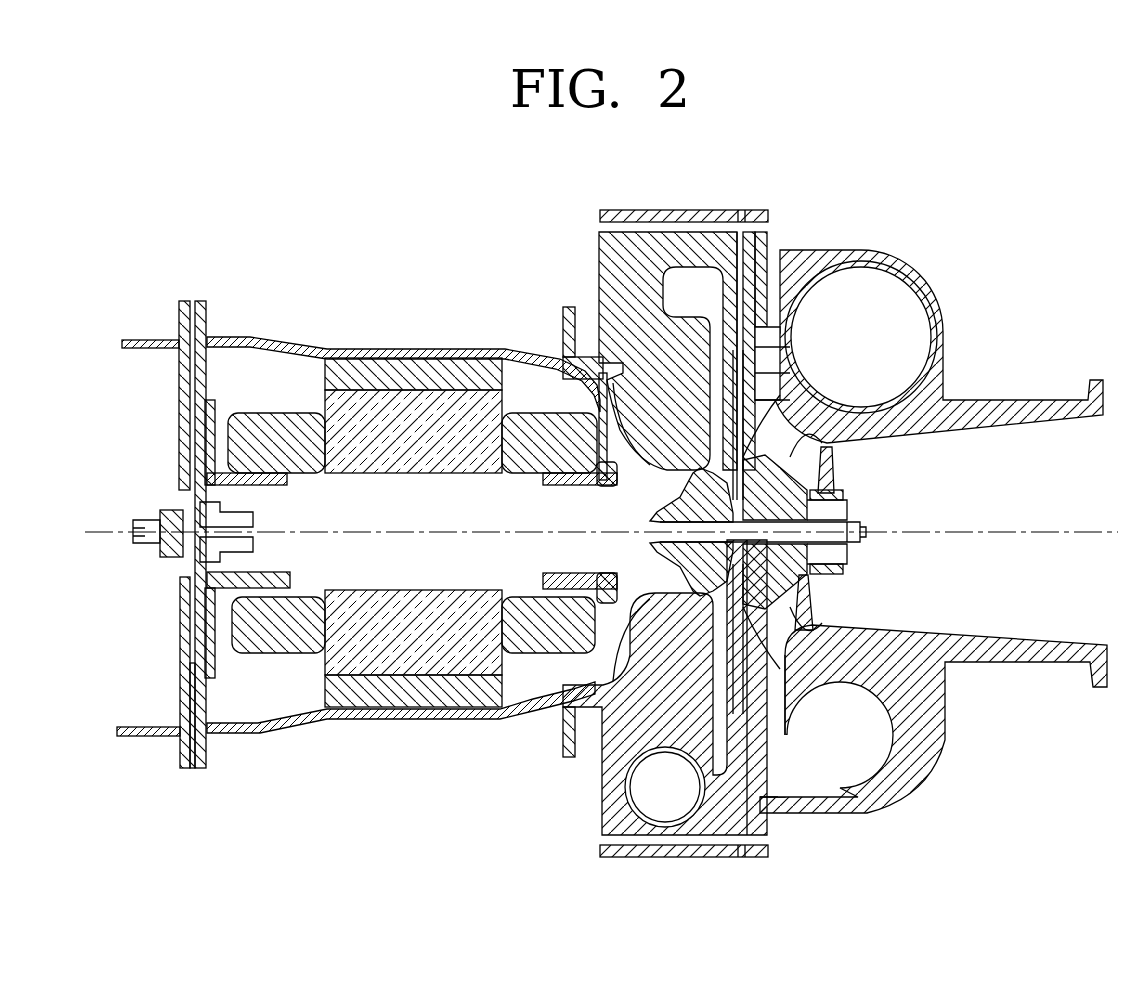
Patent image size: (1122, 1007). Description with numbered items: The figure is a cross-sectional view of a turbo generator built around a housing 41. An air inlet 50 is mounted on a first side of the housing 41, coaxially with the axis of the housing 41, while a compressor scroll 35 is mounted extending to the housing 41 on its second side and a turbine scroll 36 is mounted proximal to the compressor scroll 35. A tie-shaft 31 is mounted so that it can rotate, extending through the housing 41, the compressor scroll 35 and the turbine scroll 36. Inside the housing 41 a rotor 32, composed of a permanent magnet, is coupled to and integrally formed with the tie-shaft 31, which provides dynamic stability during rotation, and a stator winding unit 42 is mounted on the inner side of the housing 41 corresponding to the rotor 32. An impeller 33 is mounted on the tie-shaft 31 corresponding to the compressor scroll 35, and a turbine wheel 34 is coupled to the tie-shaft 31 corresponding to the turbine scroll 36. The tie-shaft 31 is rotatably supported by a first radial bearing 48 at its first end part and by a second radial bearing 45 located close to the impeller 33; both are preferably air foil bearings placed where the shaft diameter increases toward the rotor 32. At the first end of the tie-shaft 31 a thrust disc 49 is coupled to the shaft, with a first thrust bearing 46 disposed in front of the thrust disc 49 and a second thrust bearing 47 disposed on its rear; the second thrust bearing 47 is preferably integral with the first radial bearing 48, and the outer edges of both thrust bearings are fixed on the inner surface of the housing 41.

The tie-shaft 31 is at (857, 538).
The rotor 32 is at (435, 503).
The impeller 33 is at (743, 497).
The turbine wheel 34 is at (807, 578).
The compressor scroll 35 is at (643, 793).
The turbine scroll 36 is at (853, 763).
The housing 41 is at (261, 733).
The stator winding unit 42 is at (408, 652).
The second radial bearing 45 is at (577, 585).
The first thrust bearing 46 is at (178, 376).
The second thrust bearing 47 is at (214, 395).
The first radial bearing 48 is at (266, 478).
The thrust disc 49 is at (198, 600).
The air inlet 50 is at (128, 737).